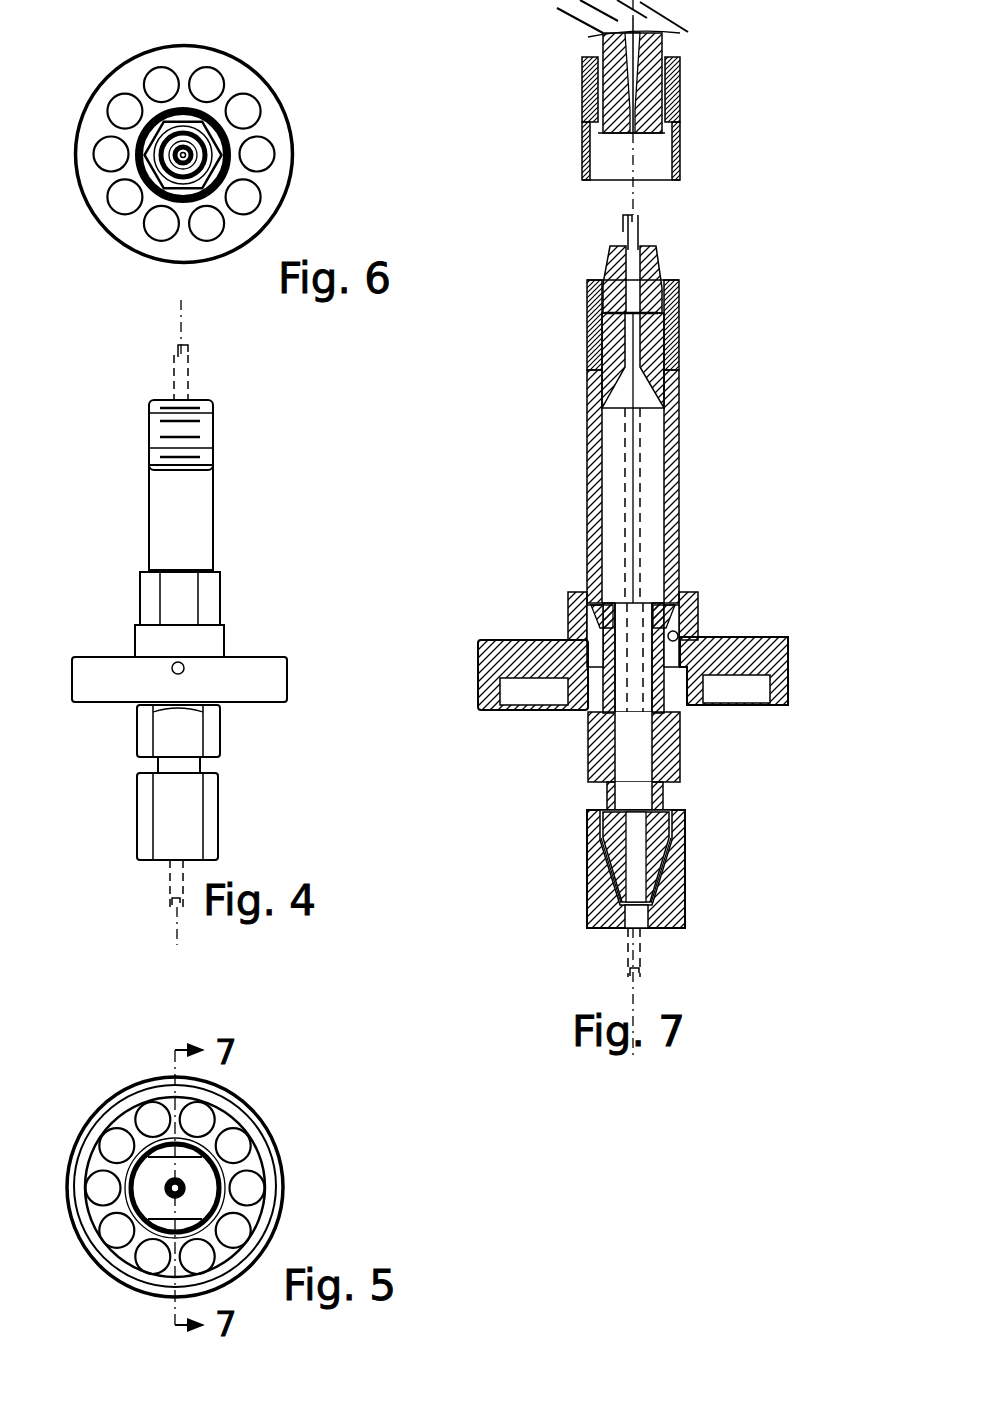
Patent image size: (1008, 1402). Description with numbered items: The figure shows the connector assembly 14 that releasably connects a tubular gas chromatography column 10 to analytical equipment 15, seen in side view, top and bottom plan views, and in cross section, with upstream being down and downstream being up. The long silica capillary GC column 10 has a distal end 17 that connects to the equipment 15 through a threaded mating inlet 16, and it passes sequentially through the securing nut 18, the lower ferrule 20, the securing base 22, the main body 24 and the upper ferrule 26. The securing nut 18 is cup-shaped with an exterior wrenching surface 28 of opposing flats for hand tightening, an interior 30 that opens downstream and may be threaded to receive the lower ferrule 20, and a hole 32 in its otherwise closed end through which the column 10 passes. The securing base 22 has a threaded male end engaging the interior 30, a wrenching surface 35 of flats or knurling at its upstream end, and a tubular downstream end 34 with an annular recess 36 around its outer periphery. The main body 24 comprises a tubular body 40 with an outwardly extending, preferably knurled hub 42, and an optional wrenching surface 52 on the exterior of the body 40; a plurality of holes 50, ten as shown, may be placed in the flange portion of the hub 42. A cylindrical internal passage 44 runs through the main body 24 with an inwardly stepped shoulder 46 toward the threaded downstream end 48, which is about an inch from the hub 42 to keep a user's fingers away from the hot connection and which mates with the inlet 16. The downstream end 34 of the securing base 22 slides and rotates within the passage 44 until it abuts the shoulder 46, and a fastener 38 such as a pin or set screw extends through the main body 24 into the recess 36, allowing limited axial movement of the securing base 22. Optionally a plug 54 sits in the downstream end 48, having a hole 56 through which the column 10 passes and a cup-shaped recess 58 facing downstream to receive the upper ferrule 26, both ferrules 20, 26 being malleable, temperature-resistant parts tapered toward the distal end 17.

In FIG. 6, the GC column 10 is at (188, 155).
In FIG. 4, the GC column 10 is at (196, 373).
In FIG. 5, the GC column 10 is at (190, 1193).
In FIG. 7, the GC column 10 is at (640, 238).
In FIG. 4, the connector assembly 14 is at (189, 509).
In FIG. 7, the connector assembly 14 is at (642, 462).
In FIG. 7, the analytical equipment 15 is at (560, 34).
In FIG. 7, the mating inlet 16 is at (576, 152).
In FIG. 4, the distal end 17 is at (178, 352).
In FIG. 7, the distal end 17 is at (641, 206).
In FIG. 4, the securing nut 18 is at (176, 814).
In FIG. 5, the securing nut 18 is at (197, 1178).
In FIG. 7, the securing nut 18 is at (619, 888).
In FIG. 7, the lower ferrule 20 is at (662, 883).
In FIG. 4, the securing base 22 is at (165, 748).
In FIG. 7, the securing base 22 is at (650, 706).
In FIG. 6, the main body 24 is at (252, 78).
In FIG. 4, the main body 24 is at (217, 668).
In FIG. 7, the main body 24 is at (641, 692).
In FIG. 7, the upper ferrule 26 is at (656, 268).
In FIG. 4, the wrenching surface 28 is at (214, 836).
In FIG. 7, the wrenching surface 28 is at (587, 835).
In FIG. 7, the interior 30 is at (660, 906).
In FIG. 7, the hole 32 is at (641, 936).
In FIG. 7, the downstream end 34 is at (596, 592).
In FIG. 4, the wrenching surface 35 is at (220, 737).
In FIG. 7, the wrenching surface 35 is at (588, 742).
In FIG. 7, the recess 36 is at (598, 640).
In FIG. 4, the fastener 38 is at (182, 672).
In FIG. 7, the fastener 38 is at (778, 653).
In FIG. 4, the tubular body 40 is at (214, 515).
In FIG. 7, the tubular body 40 is at (587, 447).
In FIG. 6, the hub 42 is at (283, 108).
In FIG. 4, the hub 42 is at (290, 668).
In FIG. 7, the hub 42 is at (482, 700).
In FIG. 7, the internal passage 44 is at (664, 448).
In FIG. 7, the shoulder 46 is at (688, 598).
In FIG. 4, the downstream end 48 is at (213, 412).
In FIG. 7, the downstream end 48 is at (680, 283).
In FIG. 6, the holes 50 is at (245, 198).
In FIG. 5, the holes 50 is at (207, 1121).
In FIG. 6, the wrenching surface 52 is at (147, 160).
In FIG. 4, the wrenching surface 52 is at (212, 592).
In FIG. 7, the wrenching surface 52 is at (590, 540).
In FIG. 7, the plug 54 is at (650, 341).
In FIG. 7, the hole 56 is at (628, 352).
In FIG. 7, the cup-shaped recess 58 is at (612, 262).